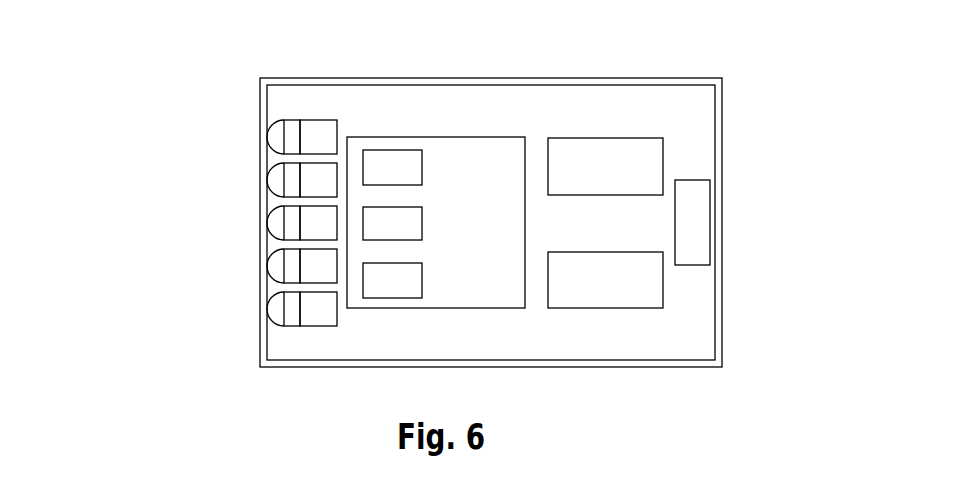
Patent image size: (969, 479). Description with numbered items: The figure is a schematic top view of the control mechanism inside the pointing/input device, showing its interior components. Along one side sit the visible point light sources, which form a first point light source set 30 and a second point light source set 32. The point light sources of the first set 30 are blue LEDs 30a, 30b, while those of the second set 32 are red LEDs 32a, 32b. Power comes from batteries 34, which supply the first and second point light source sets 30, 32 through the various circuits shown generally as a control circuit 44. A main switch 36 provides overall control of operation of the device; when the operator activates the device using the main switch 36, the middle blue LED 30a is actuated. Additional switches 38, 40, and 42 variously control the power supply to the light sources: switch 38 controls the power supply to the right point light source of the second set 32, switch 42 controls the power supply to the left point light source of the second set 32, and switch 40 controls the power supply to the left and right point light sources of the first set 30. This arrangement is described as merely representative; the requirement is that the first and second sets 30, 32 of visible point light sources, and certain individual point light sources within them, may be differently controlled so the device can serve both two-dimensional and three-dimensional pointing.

The first point light source set 30 is at (277, 263).
The middle blue LED 30a is at (291, 214).
The blue LED 30b is at (313, 128).
The second point light source set 32 is at (279, 266).
The red LED 32a is at (322, 183).
The red LED 32b is at (325, 273).
The batteries 34 is at (637, 270).
The main switch 36 is at (693, 227).
The switch 38 is at (382, 162).
The switch 40 is at (408, 228).
The switch 42 is at (397, 287).
The control circuit 44 is at (513, 172).